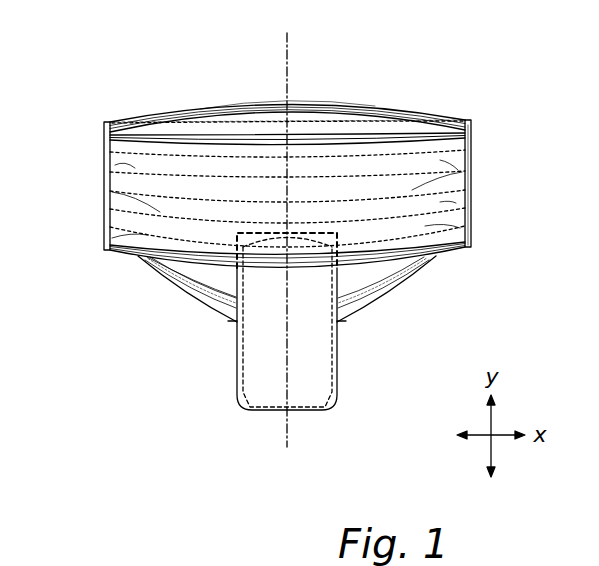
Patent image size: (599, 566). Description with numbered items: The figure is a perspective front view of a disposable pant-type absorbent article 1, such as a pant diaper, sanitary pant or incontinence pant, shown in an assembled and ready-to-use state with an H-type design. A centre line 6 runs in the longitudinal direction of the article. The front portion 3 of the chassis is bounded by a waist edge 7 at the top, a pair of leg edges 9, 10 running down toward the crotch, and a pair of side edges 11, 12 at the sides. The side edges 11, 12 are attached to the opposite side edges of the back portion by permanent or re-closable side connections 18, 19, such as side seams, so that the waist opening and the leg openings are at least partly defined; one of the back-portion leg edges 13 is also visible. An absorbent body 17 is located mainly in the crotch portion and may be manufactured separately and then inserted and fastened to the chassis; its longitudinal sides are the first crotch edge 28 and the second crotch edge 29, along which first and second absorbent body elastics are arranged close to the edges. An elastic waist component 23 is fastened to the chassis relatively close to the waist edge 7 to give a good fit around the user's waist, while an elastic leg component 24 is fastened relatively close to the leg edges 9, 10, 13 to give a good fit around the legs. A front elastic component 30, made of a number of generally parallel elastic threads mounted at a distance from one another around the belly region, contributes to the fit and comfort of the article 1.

The pant-type absorbent article 1 is at (292, 291).
The front portion 3 is at (455, 202).
The centre line 6 is at (288, 62).
The waist edge 7 is at (360, 105).
The leg edge 9 is at (147, 262).
The leg edge 10 is at (410, 268).
The side edge 11 is at (106, 207).
The side edge 12 is at (468, 212).
The leg edge 13 is at (165, 263).
The absorbent body 17 is at (318, 372).
The side connection 18 is at (106, 172).
The side connection 19 is at (471, 155).
The elastic waist component 23 is at (408, 112).
The elastic leg component 24 is at (125, 258).
The first crotch edge 28 is at (233, 368).
The second crotch edge 29 is at (340, 380).
The front elastic component 30 is at (166, 154).